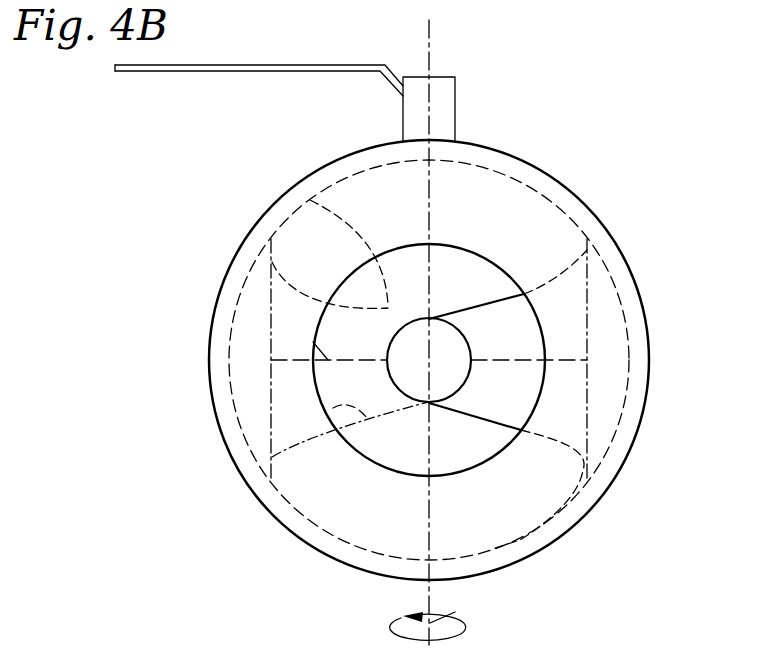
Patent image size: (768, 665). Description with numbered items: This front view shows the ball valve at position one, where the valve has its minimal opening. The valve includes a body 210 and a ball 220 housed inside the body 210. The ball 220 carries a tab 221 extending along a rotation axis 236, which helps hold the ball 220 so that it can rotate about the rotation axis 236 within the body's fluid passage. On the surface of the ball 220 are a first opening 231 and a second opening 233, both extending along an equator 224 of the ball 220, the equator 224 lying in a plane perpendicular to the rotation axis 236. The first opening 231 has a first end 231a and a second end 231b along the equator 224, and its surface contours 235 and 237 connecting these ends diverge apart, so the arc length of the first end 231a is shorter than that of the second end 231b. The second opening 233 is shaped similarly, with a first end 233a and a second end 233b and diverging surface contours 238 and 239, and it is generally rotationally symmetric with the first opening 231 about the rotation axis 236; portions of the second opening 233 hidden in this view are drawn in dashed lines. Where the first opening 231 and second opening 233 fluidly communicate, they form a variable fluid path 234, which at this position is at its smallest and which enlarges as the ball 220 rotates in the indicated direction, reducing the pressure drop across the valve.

The body 210 is at (552, 173).
The ball 220 is at (395, 447).
The tab 221 is at (455, 95).
The equator 224 is at (313, 342).
The first opening 231 is at (467, 417).
The first end of the first opening 231a is at (387, 360).
The second end of the first opening 231b is at (587, 360).
The second opening 233 is at (313, 203).
The first end of the second opening 233a is at (472, 362).
The second end of the second opening 233b is at (271, 360).
The variable fluid path 234 is at (452, 348).
The surface contour of the first opening 235 is at (477, 307).
The rotation axis 236 is at (455, 612).
The surface contour of the first opening 237 is at (497, 427).
The surface contour of the second opening 238 is at (353, 312).
The surface contour of the second opening 239 is at (333, 408).